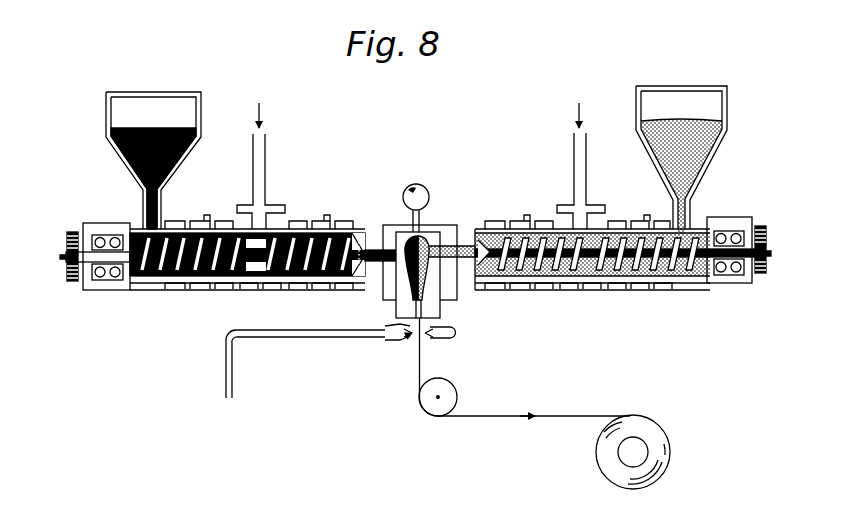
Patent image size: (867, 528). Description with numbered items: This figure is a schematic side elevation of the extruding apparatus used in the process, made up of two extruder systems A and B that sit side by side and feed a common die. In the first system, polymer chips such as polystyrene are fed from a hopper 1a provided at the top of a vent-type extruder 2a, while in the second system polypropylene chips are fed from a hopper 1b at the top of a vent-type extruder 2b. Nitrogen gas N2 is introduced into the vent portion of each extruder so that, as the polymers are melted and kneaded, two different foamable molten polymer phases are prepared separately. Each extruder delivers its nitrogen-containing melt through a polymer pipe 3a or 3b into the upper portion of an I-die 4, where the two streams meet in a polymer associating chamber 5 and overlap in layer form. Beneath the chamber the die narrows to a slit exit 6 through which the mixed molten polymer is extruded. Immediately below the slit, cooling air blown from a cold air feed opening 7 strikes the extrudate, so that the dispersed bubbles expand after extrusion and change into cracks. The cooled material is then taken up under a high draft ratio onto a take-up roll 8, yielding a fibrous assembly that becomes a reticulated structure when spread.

The extruder system A is at (100, 221).
The extruder system B is at (733, 216).
The hopper 1a is at (125, 100).
The hopper 1b is at (670, 90).
The vent-type extruder 2a is at (155, 290).
The vent-type extruder 2b is at (692, 283).
The polymer pipe 3a is at (376, 238).
The polymer pipe 3b is at (466, 240).
The die 4 is at (430, 233).
The associating chamber 5 is at (443, 304).
The slit exit 6 is at (417, 343).
The air feed opening 7 is at (385, 341).
The take-up spool 8 is at (667, 456).
The nitrogen gas N2 is at (261, 154).